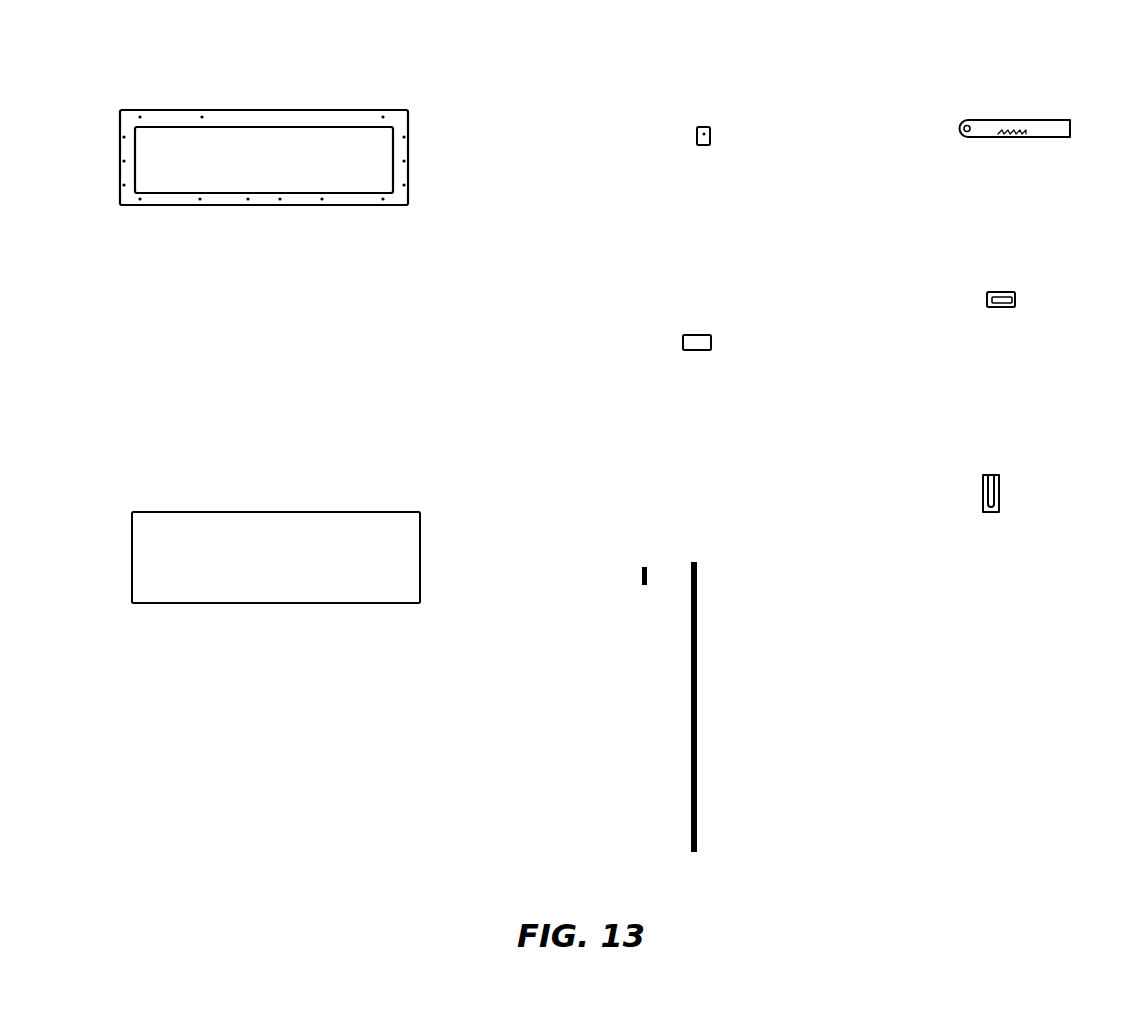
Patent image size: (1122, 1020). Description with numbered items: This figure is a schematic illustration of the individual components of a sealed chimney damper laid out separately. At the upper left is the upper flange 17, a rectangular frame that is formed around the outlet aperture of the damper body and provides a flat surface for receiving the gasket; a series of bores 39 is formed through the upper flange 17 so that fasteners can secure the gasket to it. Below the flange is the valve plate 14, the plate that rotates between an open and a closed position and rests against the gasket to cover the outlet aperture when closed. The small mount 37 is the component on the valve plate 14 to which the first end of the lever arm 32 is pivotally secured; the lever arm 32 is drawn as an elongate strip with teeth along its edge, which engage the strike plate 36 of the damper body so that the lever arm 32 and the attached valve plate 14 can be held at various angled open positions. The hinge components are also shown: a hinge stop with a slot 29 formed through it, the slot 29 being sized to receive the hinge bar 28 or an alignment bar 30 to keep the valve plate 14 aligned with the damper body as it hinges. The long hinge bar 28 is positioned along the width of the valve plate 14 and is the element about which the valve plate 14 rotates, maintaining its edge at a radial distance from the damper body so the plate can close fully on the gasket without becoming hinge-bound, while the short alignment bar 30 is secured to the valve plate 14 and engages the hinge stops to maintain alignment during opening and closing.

The valve plate 14 is at (280, 512).
The upper flange 17 is at (367, 111).
The bores 39 is at (263, 117).
The mount 37 is at (703, 127).
The lever arm 32 is at (1040, 120).
The slot 29 is at (1005, 305).
The strike plate 36 is at (1000, 477).
The alignment bars 30 is at (645, 567).
The hinge bar 28 is at (697, 590).